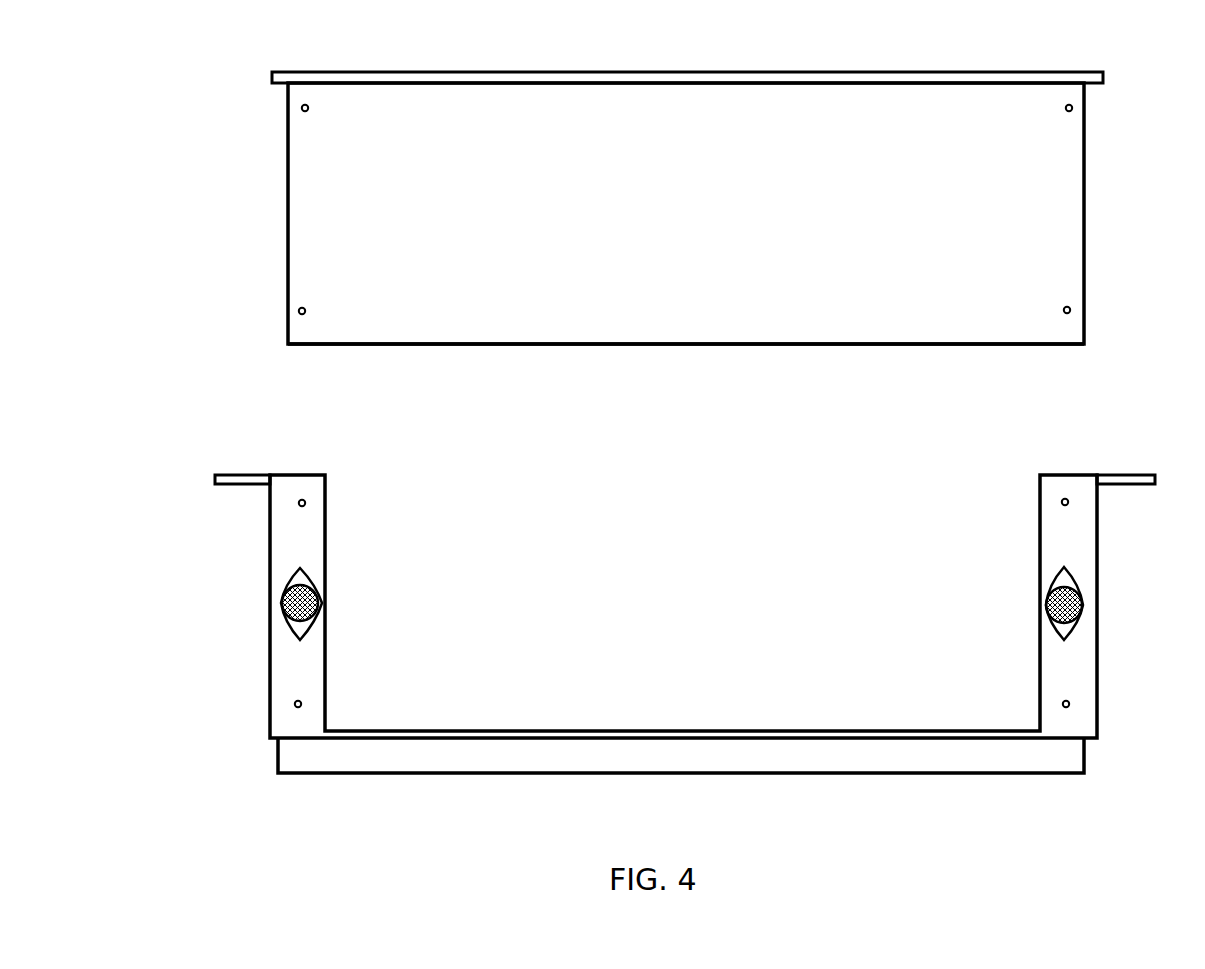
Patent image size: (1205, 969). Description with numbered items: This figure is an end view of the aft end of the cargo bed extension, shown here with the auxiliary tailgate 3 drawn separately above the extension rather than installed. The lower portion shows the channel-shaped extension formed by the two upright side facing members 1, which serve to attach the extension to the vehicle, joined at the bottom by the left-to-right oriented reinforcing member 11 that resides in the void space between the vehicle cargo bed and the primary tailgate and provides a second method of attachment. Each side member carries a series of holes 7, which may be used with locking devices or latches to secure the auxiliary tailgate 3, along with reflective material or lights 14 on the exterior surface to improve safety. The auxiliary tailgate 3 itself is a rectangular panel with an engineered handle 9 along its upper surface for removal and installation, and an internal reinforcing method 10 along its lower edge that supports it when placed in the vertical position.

The side facing members 1 is at (215, 478).
The auxiliary tailgate 3 is at (1064, 204).
The series of holes 7 is at (295, 704).
The engineered handle 9 is at (1103, 76).
The internal reinforcing method 10 is at (287, 343).
The reinforcing member 11 is at (1064, 767).
The reflective material or lights 14 is at (1084, 605).